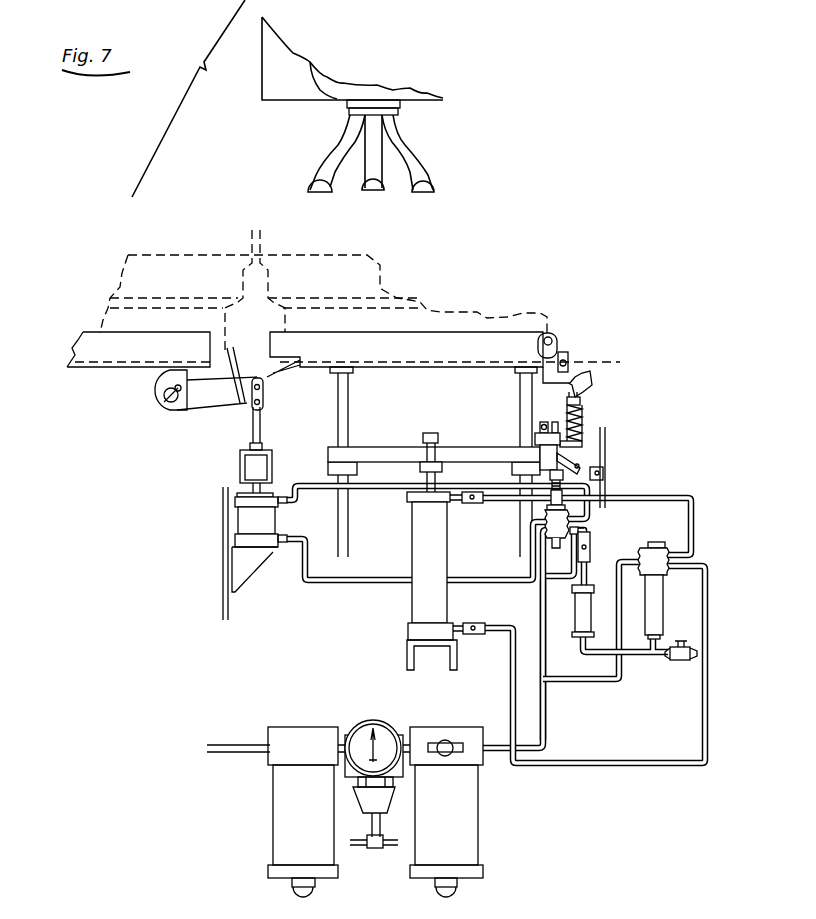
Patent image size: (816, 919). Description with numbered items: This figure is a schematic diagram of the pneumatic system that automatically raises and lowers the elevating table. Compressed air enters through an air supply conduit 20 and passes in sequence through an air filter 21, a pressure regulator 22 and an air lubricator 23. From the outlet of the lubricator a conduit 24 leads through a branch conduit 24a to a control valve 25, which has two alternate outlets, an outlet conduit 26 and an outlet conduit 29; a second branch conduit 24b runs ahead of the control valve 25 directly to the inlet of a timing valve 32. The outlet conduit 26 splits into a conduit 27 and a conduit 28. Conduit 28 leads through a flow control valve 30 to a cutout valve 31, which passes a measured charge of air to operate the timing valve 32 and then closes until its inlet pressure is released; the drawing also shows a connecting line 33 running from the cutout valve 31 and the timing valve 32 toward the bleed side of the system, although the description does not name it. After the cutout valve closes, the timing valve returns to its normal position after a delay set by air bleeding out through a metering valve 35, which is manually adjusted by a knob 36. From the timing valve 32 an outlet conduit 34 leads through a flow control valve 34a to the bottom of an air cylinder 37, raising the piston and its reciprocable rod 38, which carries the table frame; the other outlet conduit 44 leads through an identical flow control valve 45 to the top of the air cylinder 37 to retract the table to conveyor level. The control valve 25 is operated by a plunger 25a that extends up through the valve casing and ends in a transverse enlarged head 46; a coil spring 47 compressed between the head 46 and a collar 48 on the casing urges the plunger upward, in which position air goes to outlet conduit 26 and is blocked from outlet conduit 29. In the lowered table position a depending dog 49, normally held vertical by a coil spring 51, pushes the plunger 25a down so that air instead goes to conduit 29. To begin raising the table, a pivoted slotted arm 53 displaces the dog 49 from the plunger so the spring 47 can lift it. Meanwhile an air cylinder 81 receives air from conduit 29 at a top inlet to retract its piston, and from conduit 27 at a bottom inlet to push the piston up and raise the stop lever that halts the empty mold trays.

The air supply conduit 20 is at (231, 750).
The air filter 21 is at (293, 735).
The pressure regulator 22 is at (355, 732).
The air lubricator 23 is at (428, 733).
The conduit 24 is at (500, 750).
The branch conduit 24a is at (538, 620).
The branch conduit 24b is at (579, 687).
The control valve 25 is at (552, 540).
The plunger 25a is at (583, 473).
The control valve outlet conduit 26 is at (578, 530).
The conduit 27 is at (573, 558).
The conduit 28 is at (584, 531).
The outlet conduit 29 is at (603, 507).
The flow control valve 30 is at (588, 557).
The cutout valve 31 is at (576, 624).
The timing valve 32 is at (653, 612).
The pipe 33 is at (655, 643).
The outlet conduit 34 is at (705, 598).
The flow control valve 34a is at (475, 637).
The metering valve 35 is at (672, 660).
The knob 36 is at (692, 633).
The air cylinder 37 is at (417, 605).
The reciprocable rod 38 is at (427, 480).
The outlet conduit 44 is at (693, 510).
The flow control valve 45 is at (472, 500).
The transverse enlarged head 46 is at (550, 477).
The coil spring 47 is at (551, 502).
The collar 48 is at (548, 508).
The depending dog 49 is at (558, 455).
The coil spring 51 is at (557, 422).
The arm 53 is at (580, 468).
The air cylinder 81 is at (250, 522).